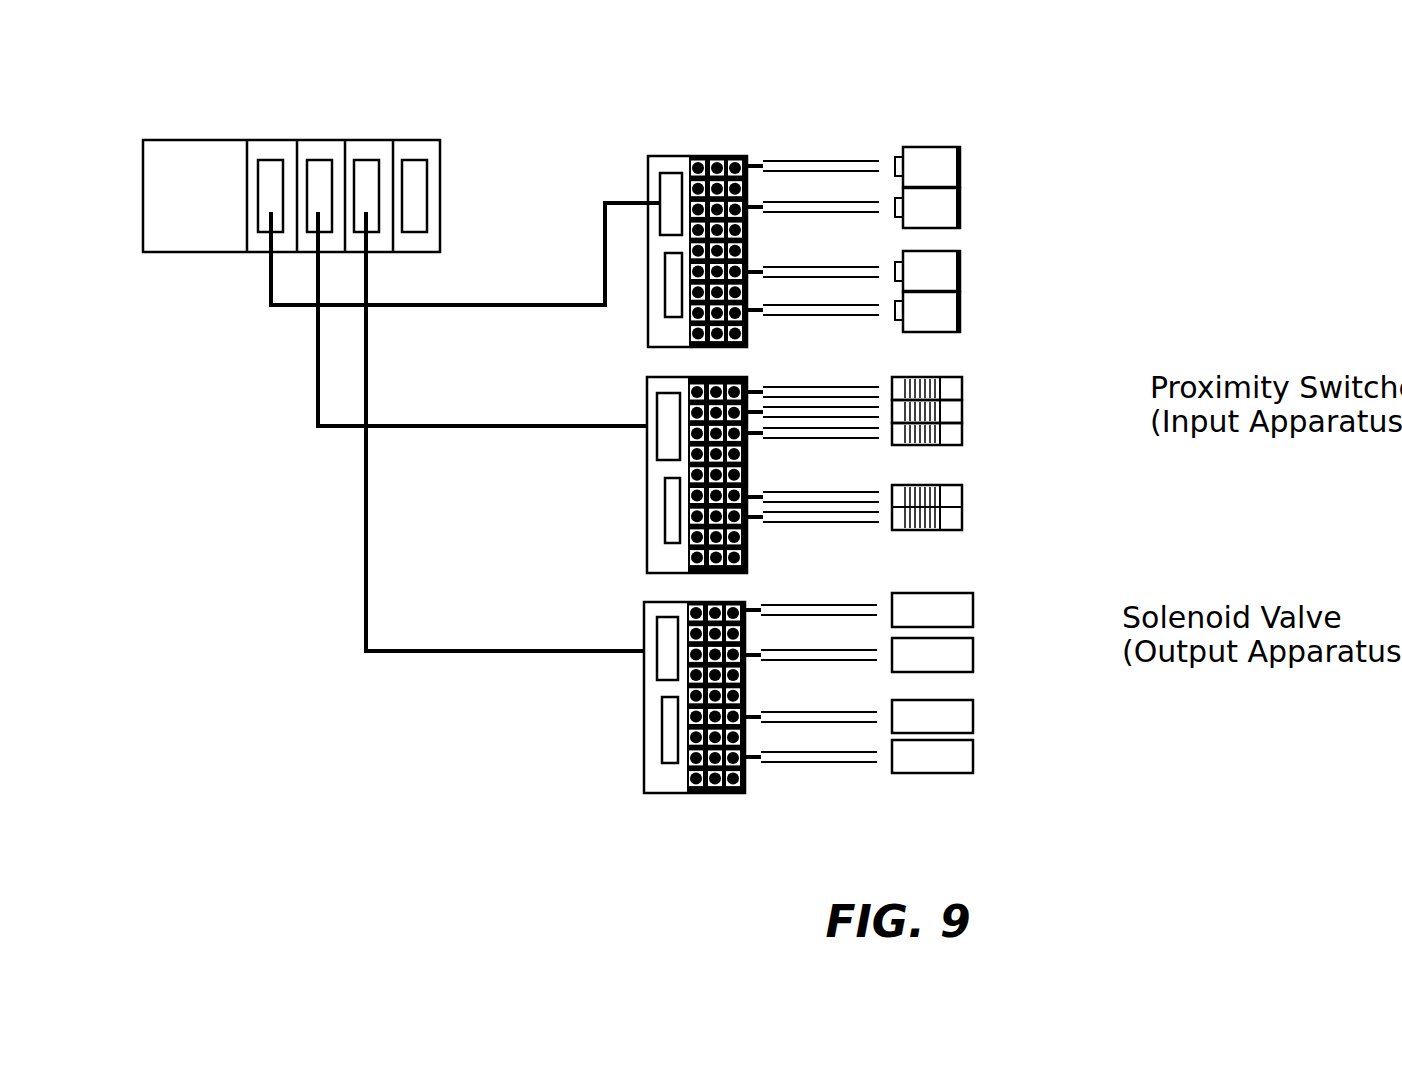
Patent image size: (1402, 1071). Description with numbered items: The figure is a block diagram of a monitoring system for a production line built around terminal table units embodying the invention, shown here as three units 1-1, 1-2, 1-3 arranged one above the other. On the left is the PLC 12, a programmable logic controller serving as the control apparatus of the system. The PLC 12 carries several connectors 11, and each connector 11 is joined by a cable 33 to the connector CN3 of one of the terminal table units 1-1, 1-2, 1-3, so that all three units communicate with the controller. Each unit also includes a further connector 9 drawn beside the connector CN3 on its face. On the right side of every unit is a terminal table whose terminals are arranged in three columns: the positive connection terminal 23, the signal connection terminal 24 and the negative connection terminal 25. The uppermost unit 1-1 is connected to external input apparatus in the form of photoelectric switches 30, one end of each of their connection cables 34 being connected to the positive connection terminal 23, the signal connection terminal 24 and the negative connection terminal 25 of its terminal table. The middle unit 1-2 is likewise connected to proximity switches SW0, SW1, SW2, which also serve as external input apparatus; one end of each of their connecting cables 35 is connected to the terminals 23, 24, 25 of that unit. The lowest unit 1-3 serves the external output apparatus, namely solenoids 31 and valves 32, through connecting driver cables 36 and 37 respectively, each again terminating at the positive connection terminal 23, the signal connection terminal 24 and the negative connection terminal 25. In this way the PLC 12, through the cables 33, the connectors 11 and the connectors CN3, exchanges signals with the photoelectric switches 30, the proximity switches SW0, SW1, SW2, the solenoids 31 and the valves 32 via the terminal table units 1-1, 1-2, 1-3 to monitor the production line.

The terminal table unit 1-1 is at (652, 155).
The terminal table unit 1-2 is at (750, 377).
The terminal table unit 1-3 is at (673, 793).
The connector 9 is at (658, 309).
The connector 11 is at (272, 160).
The PLC (programmable logic controller) 12 is at (185, 136).
The positive connection terminal 23 is at (698, 156).
The signal connection terminal 24 is at (717, 156).
The negative connection terminal 25 is at (738, 156).
The photoelectric switch 30 is at (960, 205).
The solenoid 31 is at (975, 608).
The valve 32 is at (975, 657).
The cable 33 is at (508, 307).
The connection cable 34 is at (837, 208).
The connecting cable 35 is at (850, 435).
The connecting driver cable 36 is at (870, 603).
The connecting driver cable 37 is at (865, 708).
The connector CN3 is at (663, 183).
The proximity switch SW0 is at (963, 390).
The proximity switch SW1 is at (963, 405).
The proximity switch SW2 is at (963, 437).